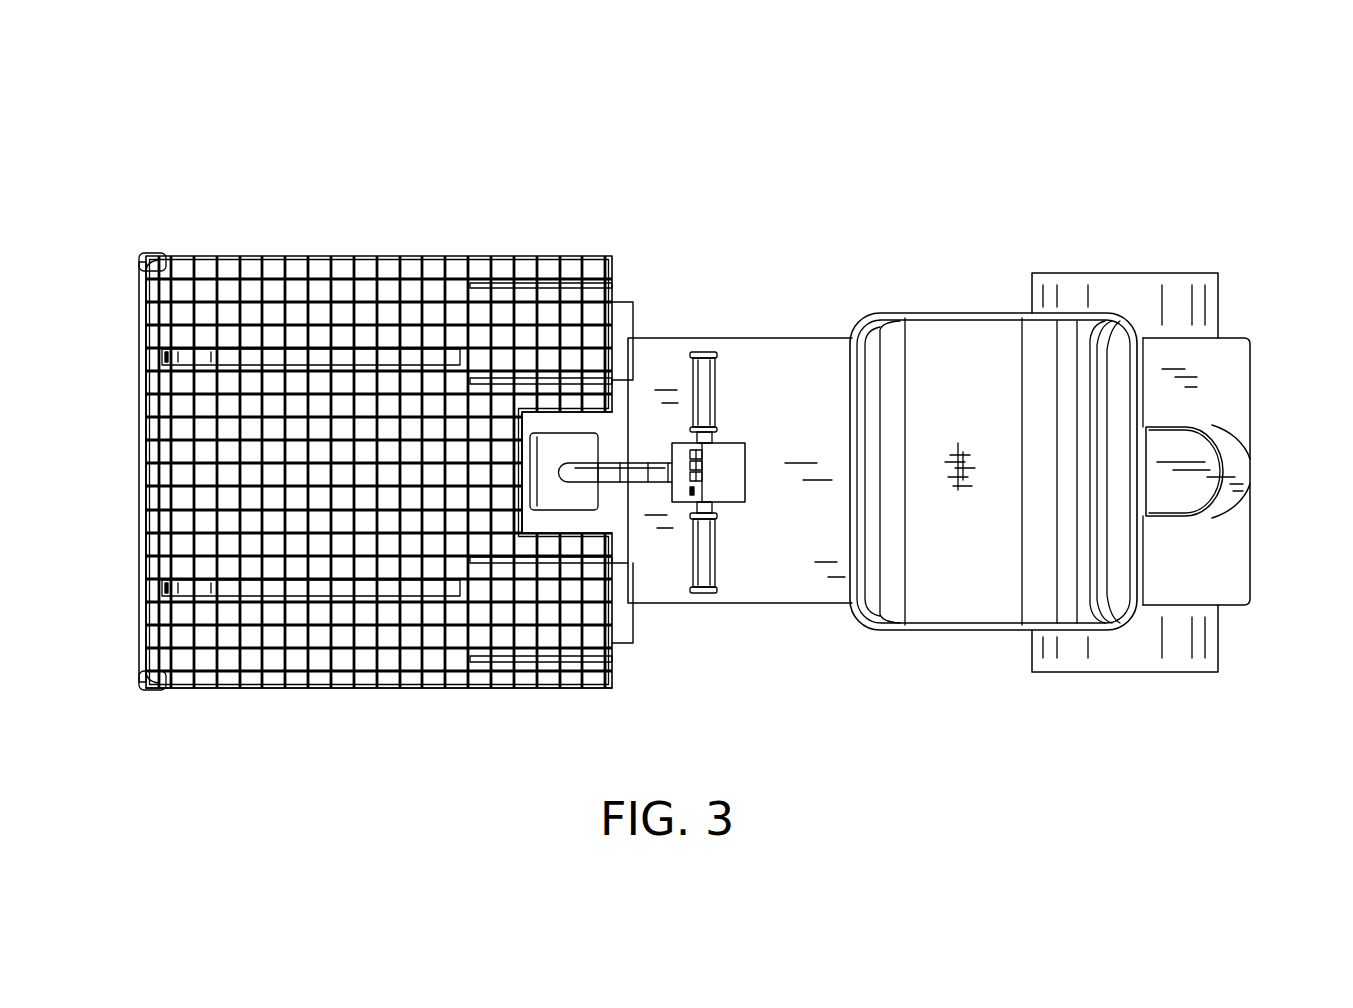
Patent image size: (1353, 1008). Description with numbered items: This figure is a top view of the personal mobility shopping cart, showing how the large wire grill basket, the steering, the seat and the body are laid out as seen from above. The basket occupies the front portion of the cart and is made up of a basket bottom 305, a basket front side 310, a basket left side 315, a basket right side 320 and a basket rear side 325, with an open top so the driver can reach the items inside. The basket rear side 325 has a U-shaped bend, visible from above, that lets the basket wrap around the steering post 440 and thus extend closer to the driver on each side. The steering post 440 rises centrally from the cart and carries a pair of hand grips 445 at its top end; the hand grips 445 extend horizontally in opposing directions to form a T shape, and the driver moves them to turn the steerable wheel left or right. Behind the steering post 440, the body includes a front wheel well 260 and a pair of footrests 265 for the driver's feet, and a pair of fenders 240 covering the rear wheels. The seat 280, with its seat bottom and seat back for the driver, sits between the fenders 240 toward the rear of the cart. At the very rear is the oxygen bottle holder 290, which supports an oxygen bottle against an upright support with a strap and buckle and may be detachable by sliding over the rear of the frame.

The basket front side 310 is at (140, 427).
The basket right side 320 is at (265, 255).
The basket bottom 305 is at (400, 340).
The basket left side 315 is at (265, 690).
The basket rear side 325 is at (608, 540).
The footrests 265 is at (620, 310).
The front wheel well 260 is at (610, 436).
The hand grips 445 is at (703, 567).
The steering post 440 is at (583, 475).
The oxygen bottle holder 290 is at (745, 485).
The seat 280 is at (1132, 253).
The fenders 240 is at (1177, 295).